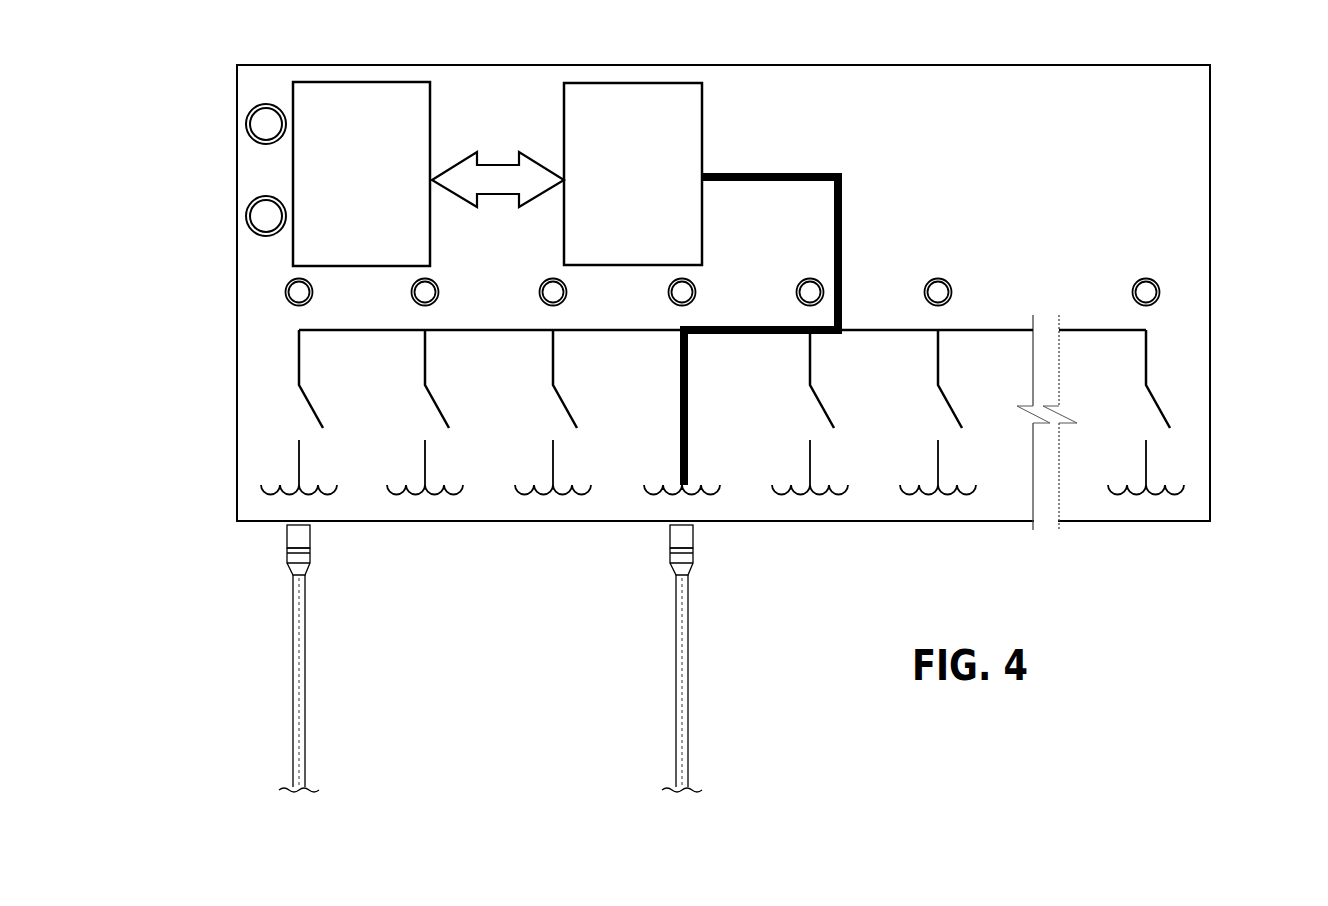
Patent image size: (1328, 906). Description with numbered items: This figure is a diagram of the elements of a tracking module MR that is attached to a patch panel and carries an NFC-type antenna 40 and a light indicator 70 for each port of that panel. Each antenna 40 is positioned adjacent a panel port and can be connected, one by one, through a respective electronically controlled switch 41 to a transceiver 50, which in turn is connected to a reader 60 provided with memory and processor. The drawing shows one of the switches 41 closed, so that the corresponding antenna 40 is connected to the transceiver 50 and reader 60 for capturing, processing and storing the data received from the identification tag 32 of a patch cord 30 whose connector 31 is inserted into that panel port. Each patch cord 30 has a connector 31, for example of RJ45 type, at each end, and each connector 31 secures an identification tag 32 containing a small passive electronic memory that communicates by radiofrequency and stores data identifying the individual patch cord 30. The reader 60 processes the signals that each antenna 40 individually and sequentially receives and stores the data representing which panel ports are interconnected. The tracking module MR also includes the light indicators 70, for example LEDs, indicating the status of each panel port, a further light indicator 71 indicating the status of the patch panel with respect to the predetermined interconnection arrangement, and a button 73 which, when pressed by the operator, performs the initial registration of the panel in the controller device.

The tracking module MR is at (1216, 195).
The patch cord 30 is at (290, 698).
The connector 31 is at (277, 541).
The identification tag 32 is at (314, 552).
The NFC-type antenna 40 is at (292, 469).
The switch 41 is at (295, 361).
The transceiver 50 is at (708, 151).
The reader 60 is at (290, 176).
The light indicator 70 is at (283, 291).
The light indicator 71 is at (246, 212).
The button 73 is at (246, 120).